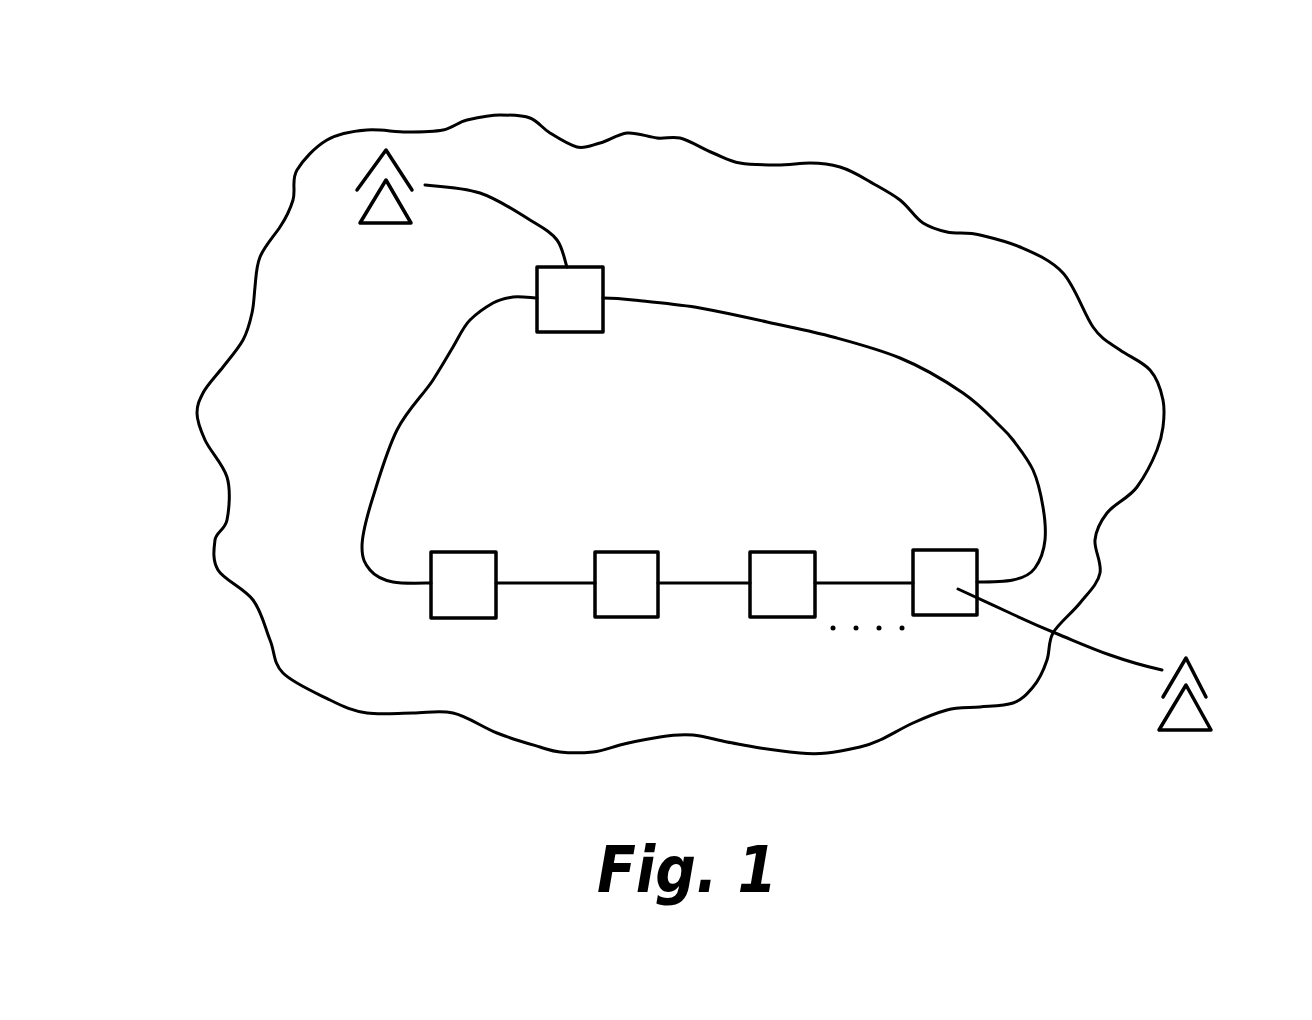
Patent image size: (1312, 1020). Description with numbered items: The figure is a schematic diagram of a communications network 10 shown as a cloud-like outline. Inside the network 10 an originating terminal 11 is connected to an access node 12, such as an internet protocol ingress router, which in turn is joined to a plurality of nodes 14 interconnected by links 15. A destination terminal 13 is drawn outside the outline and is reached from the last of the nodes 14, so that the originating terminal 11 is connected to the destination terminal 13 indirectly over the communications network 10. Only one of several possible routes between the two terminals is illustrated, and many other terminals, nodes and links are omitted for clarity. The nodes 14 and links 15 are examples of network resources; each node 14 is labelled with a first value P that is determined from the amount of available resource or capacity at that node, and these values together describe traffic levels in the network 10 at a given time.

The communications network 10 is at (992, 258).
The originating terminal 11 is at (381, 206).
The access node 12 is at (587, 282).
The destination terminal 13 is at (1193, 713).
The nodes 14 is at (613, 605).
The links 15 is at (532, 580).